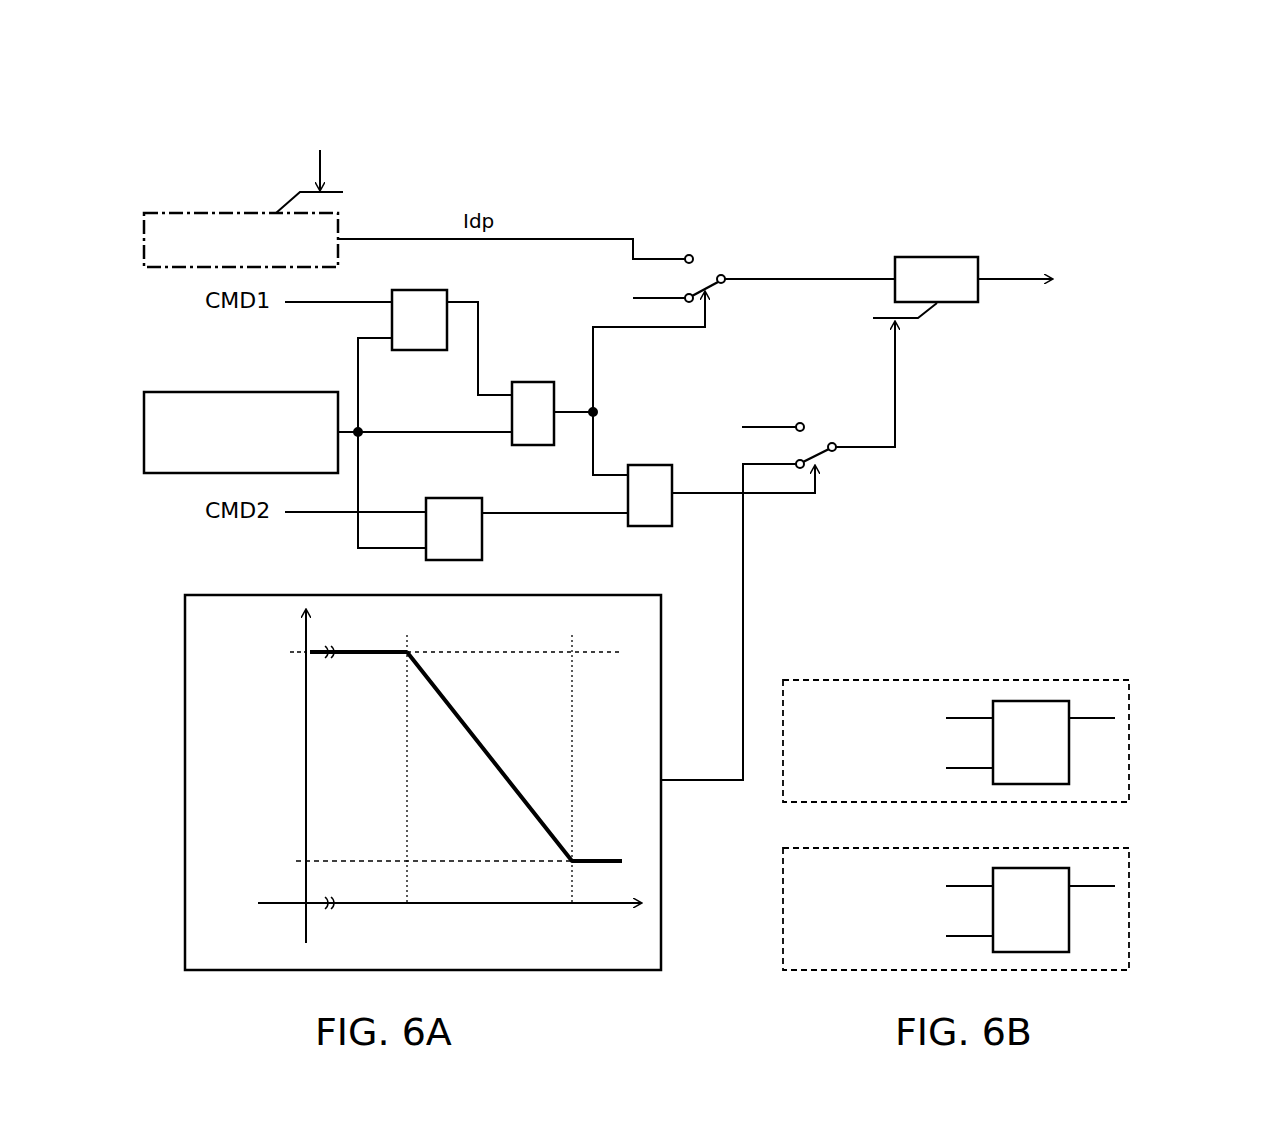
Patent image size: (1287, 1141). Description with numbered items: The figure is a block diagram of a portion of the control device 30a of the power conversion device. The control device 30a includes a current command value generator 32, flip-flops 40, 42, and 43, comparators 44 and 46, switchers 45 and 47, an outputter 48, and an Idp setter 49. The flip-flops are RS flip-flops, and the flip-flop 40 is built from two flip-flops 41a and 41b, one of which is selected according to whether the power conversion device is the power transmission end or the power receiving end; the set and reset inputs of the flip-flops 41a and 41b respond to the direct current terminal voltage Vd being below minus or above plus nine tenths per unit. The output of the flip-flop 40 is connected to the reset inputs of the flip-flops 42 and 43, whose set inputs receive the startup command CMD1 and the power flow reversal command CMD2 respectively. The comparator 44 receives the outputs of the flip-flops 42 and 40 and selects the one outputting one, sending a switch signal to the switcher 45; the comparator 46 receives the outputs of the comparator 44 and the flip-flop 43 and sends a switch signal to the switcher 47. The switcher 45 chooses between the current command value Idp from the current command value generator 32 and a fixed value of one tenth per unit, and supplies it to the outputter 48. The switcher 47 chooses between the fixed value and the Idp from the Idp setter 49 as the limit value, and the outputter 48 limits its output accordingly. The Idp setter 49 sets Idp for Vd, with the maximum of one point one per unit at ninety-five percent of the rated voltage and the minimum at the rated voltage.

In FIG. 6A, the control device 30a is at (1020, 198).
In FIG. 6A, the current command value generator 32 is at (176, 213).
In FIG. 6A, the flip-flop 40 is at (176, 392).
In FIG. 6B, the flip-flop 40 is at (1018, 825).
In FIG. 6B, the flip-flop 41a is at (1072, 762).
In FIG. 6B, the flip-flop 41b is at (991, 903).
In FIG. 6A, the flip-flop 42 is at (410, 290).
In FIG. 6A, the flip-flop 43 is at (446, 498).
In FIG. 6A, the comparator 44 is at (526, 382).
In FIG. 6A, the switcher 45 is at (700, 272).
In FIG. 6A, the comparator 46 is at (632, 465).
In FIG. 6A, the switcher 47 is at (810, 440).
In FIG. 6A, the outputter 48 is at (939, 257).
In FIG. 6A, the Idp setter 49 is at (524, 972).